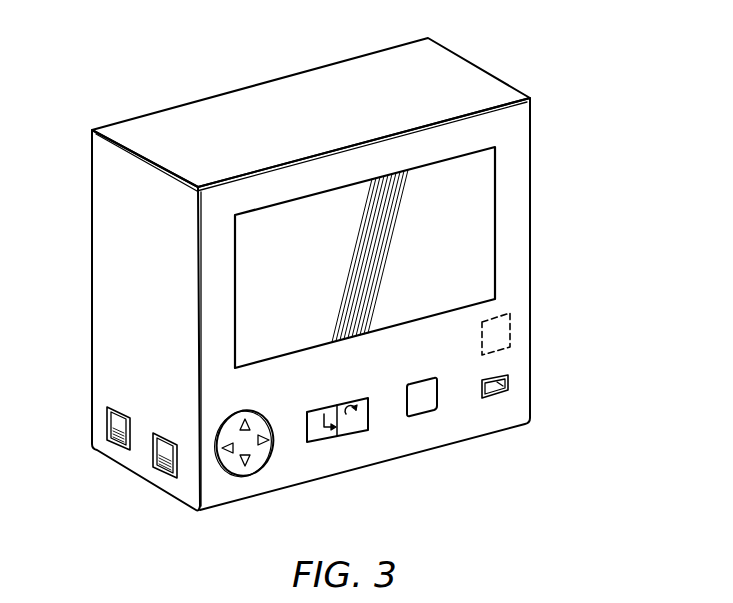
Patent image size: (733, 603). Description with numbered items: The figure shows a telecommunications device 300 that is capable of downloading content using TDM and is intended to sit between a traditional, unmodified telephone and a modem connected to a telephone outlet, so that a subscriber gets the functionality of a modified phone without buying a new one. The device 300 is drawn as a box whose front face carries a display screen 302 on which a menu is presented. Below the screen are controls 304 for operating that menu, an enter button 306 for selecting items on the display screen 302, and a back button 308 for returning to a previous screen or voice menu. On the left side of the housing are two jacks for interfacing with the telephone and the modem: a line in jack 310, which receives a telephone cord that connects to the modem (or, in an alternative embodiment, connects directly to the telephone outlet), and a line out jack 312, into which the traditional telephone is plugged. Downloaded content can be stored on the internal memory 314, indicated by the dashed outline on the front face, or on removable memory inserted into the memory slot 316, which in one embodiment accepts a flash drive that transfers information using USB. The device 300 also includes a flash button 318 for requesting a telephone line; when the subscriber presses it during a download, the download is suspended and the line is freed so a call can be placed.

The telecommunications device 300 is at (238, 74).
The display screen 302 is at (470, 228).
The controls 304 is at (265, 465).
The enter button 306 is at (322, 437).
The back button 308 is at (353, 432).
The line in jack 310 is at (107, 415).
The line out jack 312 is at (153, 452).
The internal memory 314 is at (510, 325).
The memory slot 316 is at (510, 380).
The flash button 318 is at (418, 380).